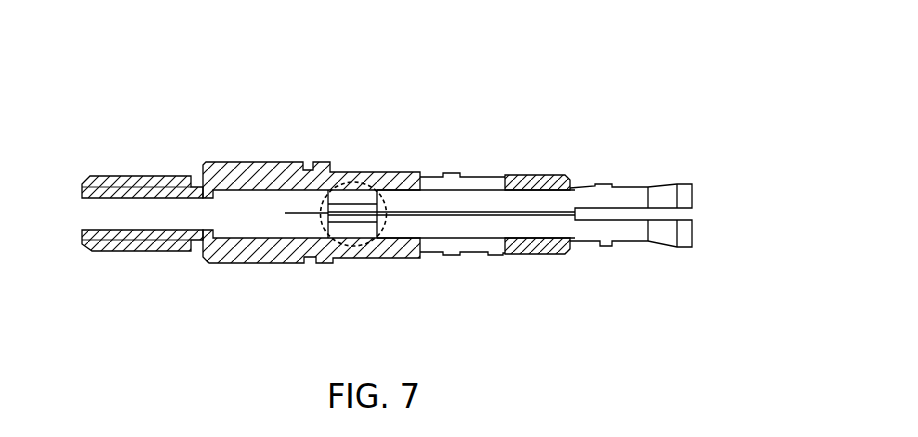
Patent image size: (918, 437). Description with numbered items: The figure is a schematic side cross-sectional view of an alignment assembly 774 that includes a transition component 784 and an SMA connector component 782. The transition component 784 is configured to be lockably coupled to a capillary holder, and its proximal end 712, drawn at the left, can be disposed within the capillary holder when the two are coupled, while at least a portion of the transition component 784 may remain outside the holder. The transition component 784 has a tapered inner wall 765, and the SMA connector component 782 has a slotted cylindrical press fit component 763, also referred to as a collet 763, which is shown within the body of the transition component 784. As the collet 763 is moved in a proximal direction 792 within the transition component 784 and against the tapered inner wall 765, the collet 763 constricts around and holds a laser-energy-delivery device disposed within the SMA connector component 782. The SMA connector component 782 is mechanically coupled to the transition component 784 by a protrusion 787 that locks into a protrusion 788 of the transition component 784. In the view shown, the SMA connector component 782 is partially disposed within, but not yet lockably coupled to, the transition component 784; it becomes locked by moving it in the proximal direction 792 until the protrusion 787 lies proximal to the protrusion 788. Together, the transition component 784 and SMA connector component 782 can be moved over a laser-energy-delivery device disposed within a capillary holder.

The alignment assembly 774 is at (442, 88).
The proximal end 712 is at (125, 175).
The transition component 784 is at (232, 178).
The tapered inner wall 765 is at (257, 187).
The slotted cylindrical press fit component 763 is at (360, 252).
The proximal direction 792 is at (233, 213).
The SMA connector component 782 is at (402, 205).
The protrusion 788 is at (487, 185).
The protrusion 787 is at (612, 183).